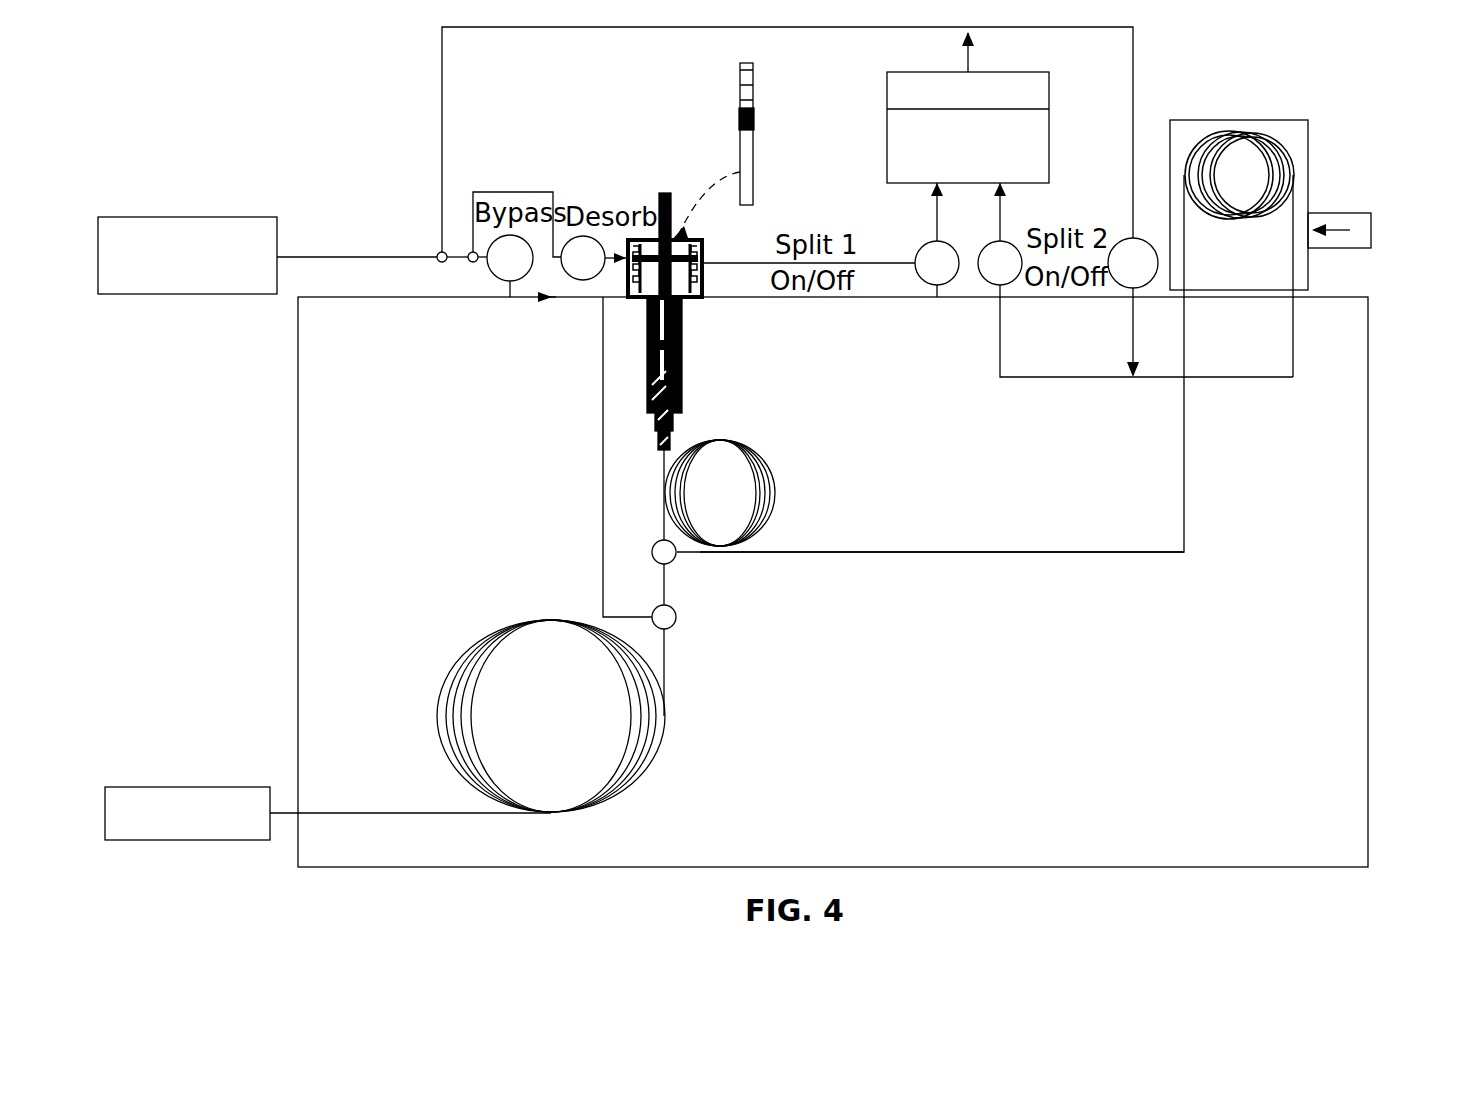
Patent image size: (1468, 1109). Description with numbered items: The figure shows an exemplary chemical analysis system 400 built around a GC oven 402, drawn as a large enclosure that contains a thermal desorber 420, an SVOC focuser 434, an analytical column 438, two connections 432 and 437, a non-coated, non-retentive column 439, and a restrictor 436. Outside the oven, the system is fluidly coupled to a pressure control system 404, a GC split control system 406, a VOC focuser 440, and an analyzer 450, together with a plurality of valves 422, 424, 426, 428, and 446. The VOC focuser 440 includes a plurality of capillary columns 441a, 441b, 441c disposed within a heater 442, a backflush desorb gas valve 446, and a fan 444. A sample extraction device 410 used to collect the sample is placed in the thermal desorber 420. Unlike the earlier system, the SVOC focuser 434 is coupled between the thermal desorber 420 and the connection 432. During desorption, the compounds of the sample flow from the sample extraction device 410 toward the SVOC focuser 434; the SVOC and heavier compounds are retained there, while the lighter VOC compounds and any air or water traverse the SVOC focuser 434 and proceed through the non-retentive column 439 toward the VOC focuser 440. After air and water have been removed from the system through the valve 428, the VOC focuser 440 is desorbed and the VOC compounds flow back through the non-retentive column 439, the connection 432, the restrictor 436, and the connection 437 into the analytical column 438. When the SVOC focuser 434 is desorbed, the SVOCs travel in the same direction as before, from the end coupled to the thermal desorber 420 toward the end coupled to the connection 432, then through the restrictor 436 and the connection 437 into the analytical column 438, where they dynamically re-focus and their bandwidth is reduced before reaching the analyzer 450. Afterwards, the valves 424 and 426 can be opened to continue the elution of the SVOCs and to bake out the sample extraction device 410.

The chemical analysis system 400 is at (247, 86).
The GC oven 402 is at (400, 440).
The pressure control system 404 is at (164, 215).
The GC split control system 406 is at (958, 72).
The sample extraction device 410 is at (753, 146).
The thermal desorber 420 is at (685, 358).
The valve 422 is at (505, 283).
The valve 424 is at (580, 283).
The valve 426 is at (935, 285).
The valve 428 is at (1003, 285).
The connection 432 is at (653, 548).
The SVOC focuser 434 is at (775, 497).
The restrictor 436 is at (668, 582).
The connection 437 is at (676, 622).
The analytical column 438 is at (655, 762).
The non-coated, non-retentive column 439 is at (990, 552).
The VOC focuser 440 is at (1240, 120).
The capillary column 441a is at (1190, 150).
The capillary column 441b is at (1272, 140).
The capillary column 441c is at (1294, 168).
The heater 442 is at (1266, 145).
The fan 444 is at (1371, 230).
The backflush desorb gas valve 446 is at (1140, 290).
The analyzer 450 is at (172, 787).